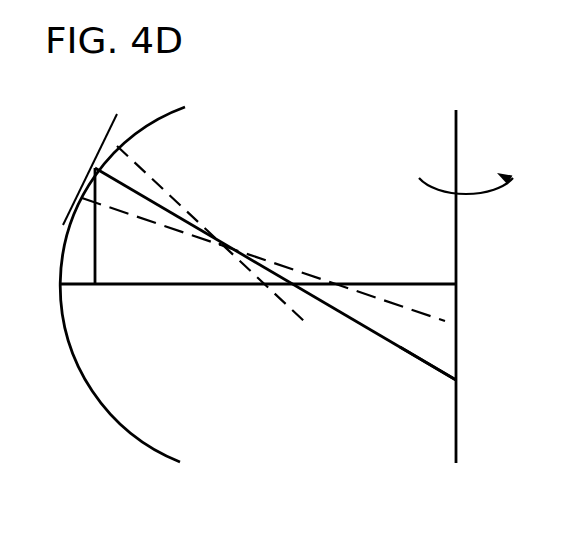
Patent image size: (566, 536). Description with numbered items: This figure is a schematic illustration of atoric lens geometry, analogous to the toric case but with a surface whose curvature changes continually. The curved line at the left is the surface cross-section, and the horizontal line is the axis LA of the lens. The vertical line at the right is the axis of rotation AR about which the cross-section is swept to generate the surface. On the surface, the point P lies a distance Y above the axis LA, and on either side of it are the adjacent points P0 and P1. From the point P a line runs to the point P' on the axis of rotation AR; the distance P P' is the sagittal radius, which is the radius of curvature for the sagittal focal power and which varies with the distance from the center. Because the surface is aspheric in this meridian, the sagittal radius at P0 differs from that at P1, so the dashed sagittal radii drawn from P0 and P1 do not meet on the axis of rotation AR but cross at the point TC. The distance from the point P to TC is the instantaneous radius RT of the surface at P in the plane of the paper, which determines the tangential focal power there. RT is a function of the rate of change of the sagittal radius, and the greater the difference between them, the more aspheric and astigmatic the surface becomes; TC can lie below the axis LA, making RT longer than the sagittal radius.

The axis LA is at (0, 283).
The axis of rotation AR is at (466, 261).
The adjacent surface point P1 is at (90, 157).
The surface point P is at (260, 267).
The distance above the vertex Y is at (107, 226).
The adjacent surface point P0 is at (238, 252).
The tangential radius of curvature RT is at (211, 234).
The crossing point of sagittal radii TC is at (224, 239).
The sagittal center point P' is at (445, 373).